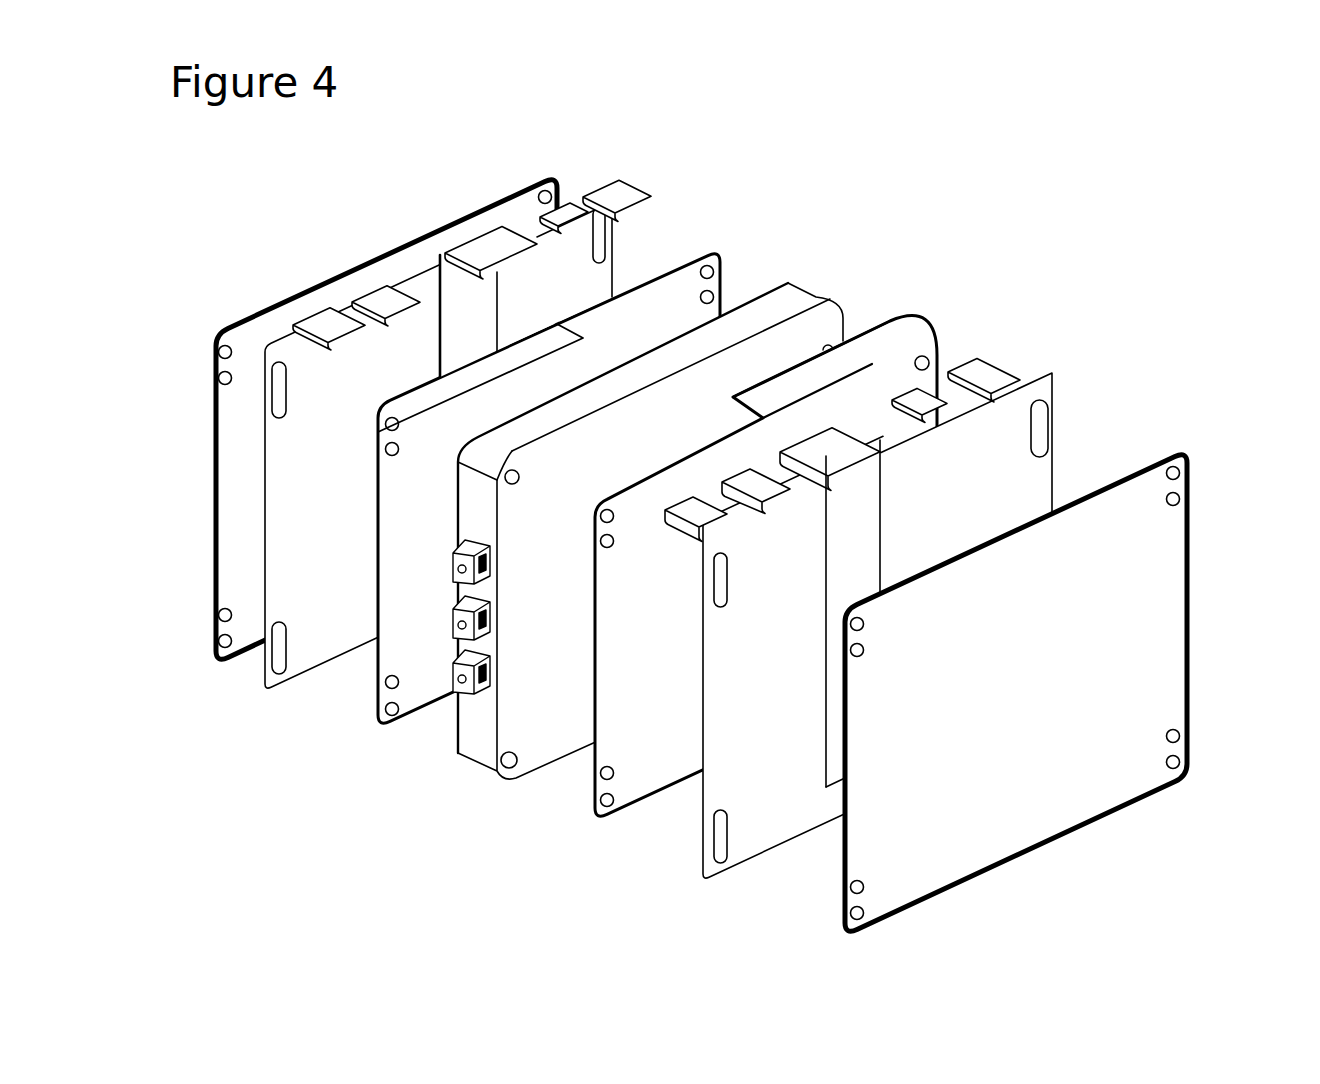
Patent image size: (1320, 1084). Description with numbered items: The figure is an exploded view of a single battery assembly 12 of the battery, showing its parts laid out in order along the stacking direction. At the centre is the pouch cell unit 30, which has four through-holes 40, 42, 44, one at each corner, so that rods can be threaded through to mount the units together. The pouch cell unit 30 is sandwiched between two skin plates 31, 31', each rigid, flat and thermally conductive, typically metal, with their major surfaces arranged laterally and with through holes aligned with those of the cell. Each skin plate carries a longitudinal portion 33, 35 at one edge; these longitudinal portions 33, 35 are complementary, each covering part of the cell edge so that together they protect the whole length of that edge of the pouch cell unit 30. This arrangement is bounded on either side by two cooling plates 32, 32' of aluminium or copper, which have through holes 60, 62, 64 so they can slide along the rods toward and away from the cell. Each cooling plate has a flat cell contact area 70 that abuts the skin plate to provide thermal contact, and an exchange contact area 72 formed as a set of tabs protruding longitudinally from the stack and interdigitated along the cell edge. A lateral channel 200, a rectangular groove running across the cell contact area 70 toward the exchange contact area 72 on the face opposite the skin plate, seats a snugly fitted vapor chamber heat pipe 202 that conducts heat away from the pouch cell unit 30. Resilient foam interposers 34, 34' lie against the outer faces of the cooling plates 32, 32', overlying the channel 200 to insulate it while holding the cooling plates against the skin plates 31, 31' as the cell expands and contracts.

The battery assembly 12 is at (701, 524).
The pouch cell unit 30 is at (480, 750).
The skin plate 31 is at (762, 603).
The skin plate 31' is at (539, 526).
The cooling plate 32 is at (774, 686).
The cooling plate 32' is at (351, 510).
The longitudinal portion 33 is at (420, 396).
The resilient interposer 34 is at (1055, 693).
The resilient interposer 34' is at (374, 464).
The longitudinal portion 35 is at (900, 340).
The through-hole 40 is at (521, 776).
The through-hole 42 is at (832, 343).
The through-hole 44 is at (518, 470).
The through hole 60 is at (722, 868).
The through hole 62 is at (1047, 426).
The through hole 64 is at (722, 607).
The cell contact area 70 is at (569, 295).
The exchange contact area 72 is at (623, 188).
The channel 200 is at (836, 795).
The heat pipe 202 is at (878, 558).